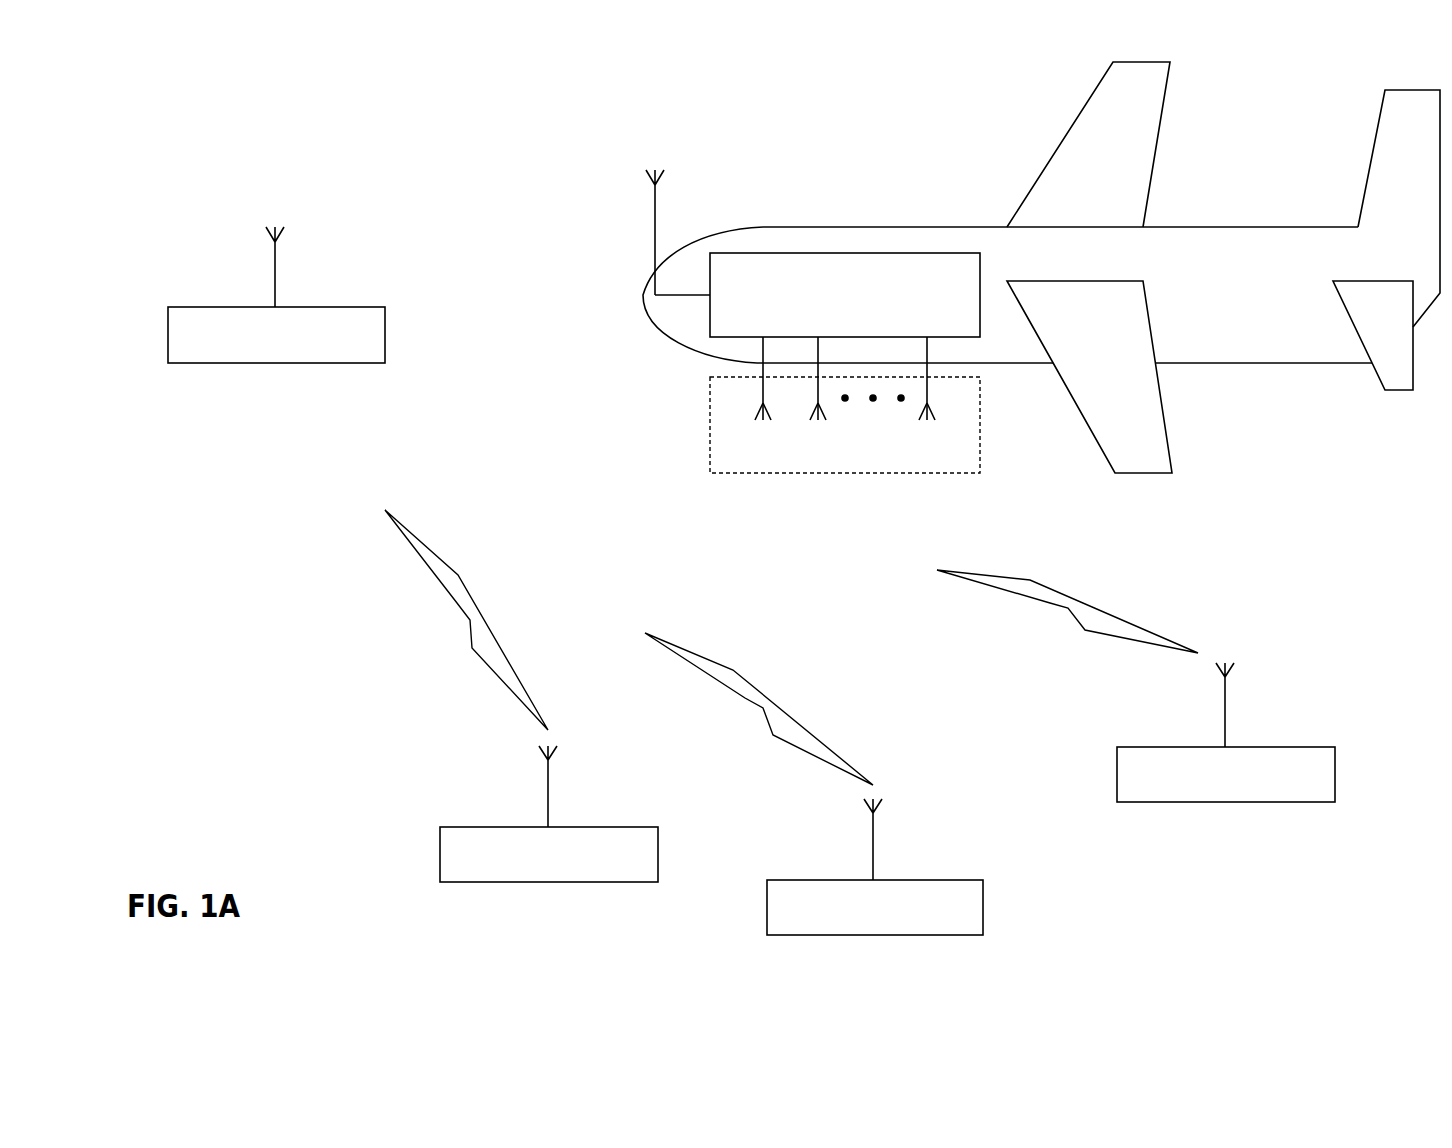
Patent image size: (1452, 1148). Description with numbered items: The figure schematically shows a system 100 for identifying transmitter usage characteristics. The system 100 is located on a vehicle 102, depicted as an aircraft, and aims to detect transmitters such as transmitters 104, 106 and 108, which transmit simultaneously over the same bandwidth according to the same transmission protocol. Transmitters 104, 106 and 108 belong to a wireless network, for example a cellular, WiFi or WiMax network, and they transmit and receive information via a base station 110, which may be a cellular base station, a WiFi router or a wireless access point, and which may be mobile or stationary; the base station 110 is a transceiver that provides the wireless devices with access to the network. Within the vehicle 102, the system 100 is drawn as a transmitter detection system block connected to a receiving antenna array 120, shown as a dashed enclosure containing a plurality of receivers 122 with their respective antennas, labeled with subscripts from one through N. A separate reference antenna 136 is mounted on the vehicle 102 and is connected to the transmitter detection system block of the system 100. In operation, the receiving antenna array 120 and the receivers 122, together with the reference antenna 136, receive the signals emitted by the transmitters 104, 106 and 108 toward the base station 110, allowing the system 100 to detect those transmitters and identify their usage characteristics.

The system 100 is at (981, 273).
The vehicle 102 is at (1223, 363).
The transmitter 104 is at (985, 895).
The transmitter 106 is at (659, 843).
The transmitter 108 is at (1337, 760).
The base station 110 is at (387, 345).
The receiving antenna array 120 is at (710, 443).
The receivers 122 is at (760, 392).
The reference antenna 136 is at (652, 210).